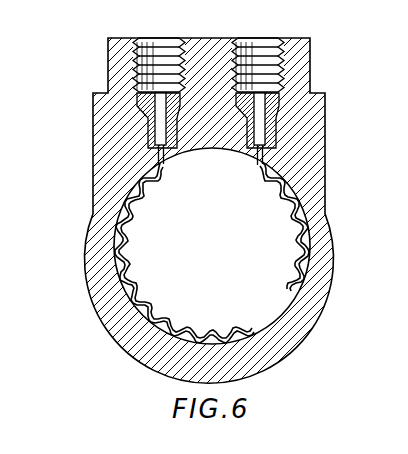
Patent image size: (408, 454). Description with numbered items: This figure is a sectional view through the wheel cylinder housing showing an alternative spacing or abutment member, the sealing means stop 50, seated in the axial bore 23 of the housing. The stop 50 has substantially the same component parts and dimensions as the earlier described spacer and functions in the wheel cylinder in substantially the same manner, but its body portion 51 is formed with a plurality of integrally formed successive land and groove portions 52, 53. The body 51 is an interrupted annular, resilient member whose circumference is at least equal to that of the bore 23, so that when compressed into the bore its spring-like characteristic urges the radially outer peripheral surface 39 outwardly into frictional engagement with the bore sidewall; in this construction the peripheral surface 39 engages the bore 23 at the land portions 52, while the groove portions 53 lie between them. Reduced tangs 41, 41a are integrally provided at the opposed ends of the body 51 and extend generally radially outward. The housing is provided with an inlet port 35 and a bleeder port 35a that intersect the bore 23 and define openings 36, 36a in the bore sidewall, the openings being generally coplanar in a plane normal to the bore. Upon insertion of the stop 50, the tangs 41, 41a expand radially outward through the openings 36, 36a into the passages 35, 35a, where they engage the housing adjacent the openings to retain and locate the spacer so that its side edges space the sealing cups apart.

The axial bore 23 is at (212, 246).
The inlet port 35 is at (152, 135).
The bleeder port 35a is at (318, 163).
The opening 36 is at (228, 210).
The opening 36a is at (224, 175).
The peripheral surface 39 is at (303, 208).
The tang 41 is at (177, 178).
The tang 41a is at (245, 202).
The sealing means stop 50 is at (173, 252).
The body portion 51 is at (173, 252).
The land portion 52 is at (173, 252).
The groove portion 53 is at (120, 250).